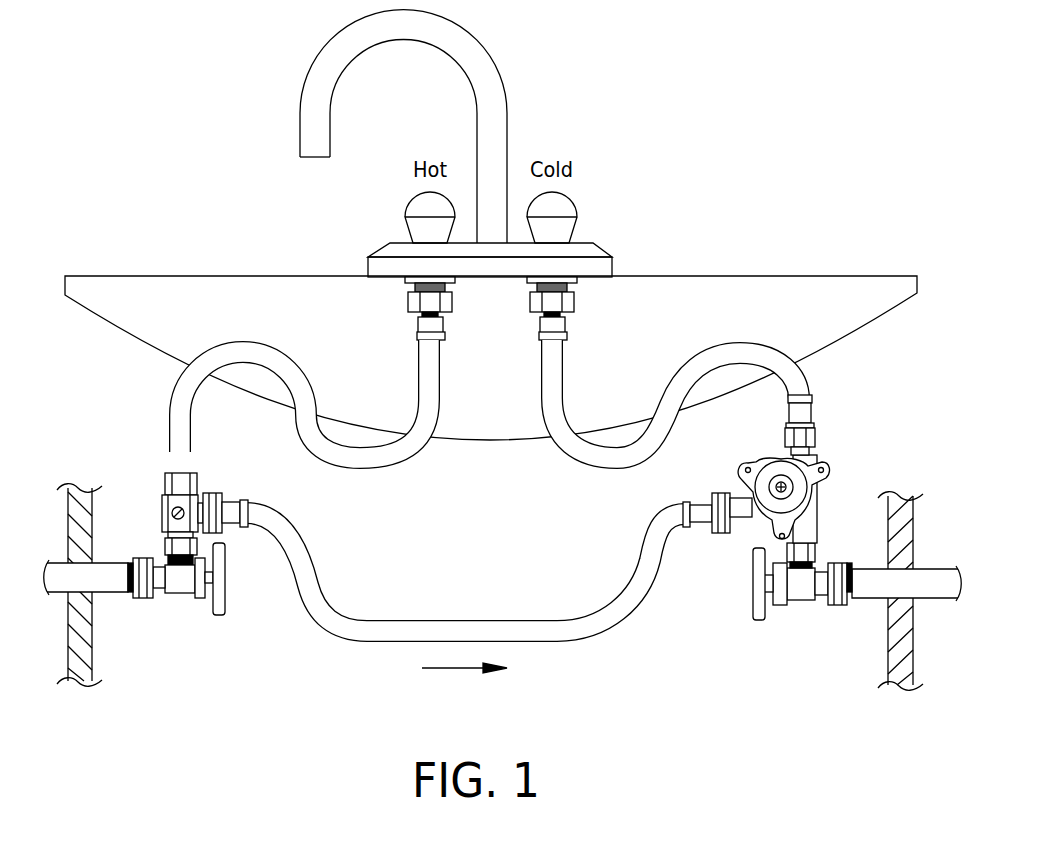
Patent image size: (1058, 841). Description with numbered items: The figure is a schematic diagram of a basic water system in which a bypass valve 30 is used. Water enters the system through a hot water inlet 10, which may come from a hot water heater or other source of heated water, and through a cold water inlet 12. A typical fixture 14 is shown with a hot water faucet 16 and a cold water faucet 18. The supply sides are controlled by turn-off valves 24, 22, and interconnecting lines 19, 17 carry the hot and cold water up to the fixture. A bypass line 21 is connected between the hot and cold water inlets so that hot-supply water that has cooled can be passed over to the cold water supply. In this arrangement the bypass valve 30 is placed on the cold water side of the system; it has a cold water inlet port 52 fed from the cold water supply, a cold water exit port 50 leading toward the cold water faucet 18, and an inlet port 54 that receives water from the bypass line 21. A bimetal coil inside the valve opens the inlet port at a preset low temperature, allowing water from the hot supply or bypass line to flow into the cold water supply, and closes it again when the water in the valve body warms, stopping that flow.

The hot water inlet 10 is at (113, 588).
The cold water inlet 12 is at (875, 589).
The fixture 14 is at (539, 141).
The hot water faucet 16 is at (413, 207).
The interconnecting line 17 is at (575, 453).
The cold water faucet 18 is at (560, 207).
The interconnecting line 19 is at (392, 450).
The bypass line 21 is at (463, 604).
The turn-off valve 22 is at (755, 602).
The turn-off valve 24 is at (225, 598).
The bypass valve 30 is at (840, 482).
The cold water exit port 50 is at (810, 455).
The cold water inlet port 52 is at (817, 552).
The inlet port 54 is at (720, 495).